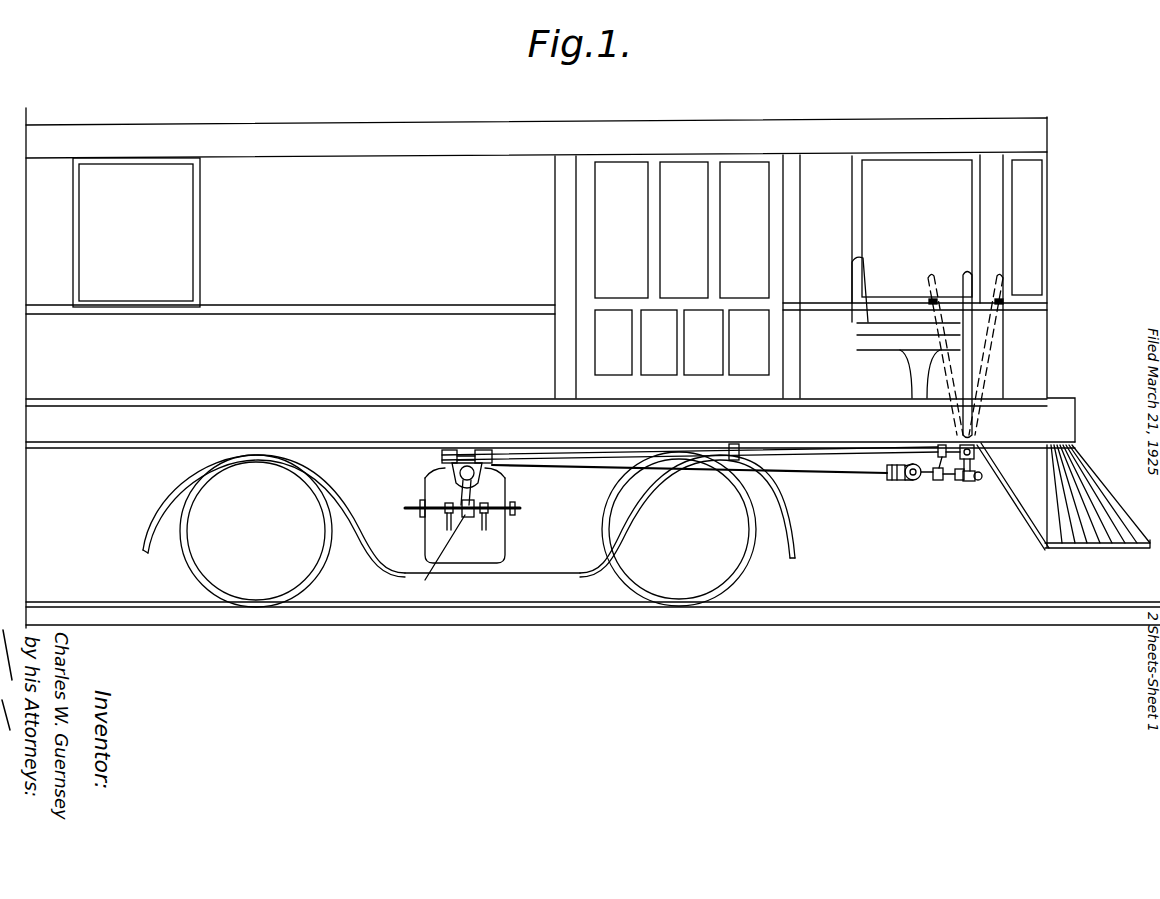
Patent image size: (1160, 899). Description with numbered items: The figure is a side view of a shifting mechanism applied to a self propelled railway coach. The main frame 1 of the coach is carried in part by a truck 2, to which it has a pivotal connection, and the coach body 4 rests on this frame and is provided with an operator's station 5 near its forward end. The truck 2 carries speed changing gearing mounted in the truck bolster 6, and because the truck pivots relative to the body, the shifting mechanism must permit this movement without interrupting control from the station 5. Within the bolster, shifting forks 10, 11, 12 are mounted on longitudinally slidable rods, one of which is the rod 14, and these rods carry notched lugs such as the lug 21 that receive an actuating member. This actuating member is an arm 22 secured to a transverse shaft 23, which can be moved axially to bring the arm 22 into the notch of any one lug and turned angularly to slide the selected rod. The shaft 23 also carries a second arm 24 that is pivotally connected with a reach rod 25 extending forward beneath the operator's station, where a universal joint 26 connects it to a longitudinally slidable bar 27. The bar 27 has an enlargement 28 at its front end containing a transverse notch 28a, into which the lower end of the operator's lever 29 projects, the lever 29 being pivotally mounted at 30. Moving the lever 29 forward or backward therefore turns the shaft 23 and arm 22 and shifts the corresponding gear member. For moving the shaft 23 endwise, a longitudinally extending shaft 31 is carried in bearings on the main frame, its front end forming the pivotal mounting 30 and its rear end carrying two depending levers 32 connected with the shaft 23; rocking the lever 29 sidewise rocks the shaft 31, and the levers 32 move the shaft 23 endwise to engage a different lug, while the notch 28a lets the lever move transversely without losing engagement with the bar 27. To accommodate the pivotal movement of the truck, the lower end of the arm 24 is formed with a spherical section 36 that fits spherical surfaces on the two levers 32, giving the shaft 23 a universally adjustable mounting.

The main frame 1 is at (100, 455).
The truck 2 is at (565, 562).
The coach body 4 is at (364, 128).
The operator's station 5 is at (906, 327).
The truck bolster 6 is at (508, 536).
The shifting fork 10 is at (494, 508).
The shifting fork 11 is at (466, 510).
The shifting fork 12 is at (447, 527).
The slidable rod 14 is at (432, 512).
The lug 21 is at (435, 556).
The arm 22 is at (485, 520).
The shaft 23 is at (457, 483).
The second arm 24 is at (437, 453).
The reach rod 25 is at (805, 480).
The universal joint 26 is at (900, 488).
The slidable bar 27 is at (929, 483).
The enlargement 28 is at (978, 483).
The transverse notch 28a is at (966, 485).
The operator's lever 29 is at (972, 362).
The pivotal mounting 30 is at (977, 440).
The longitudinally extending shaft 31 is at (812, 452).
The depending levers 32 is at (428, 470).
The spherical section 36 is at (480, 480).